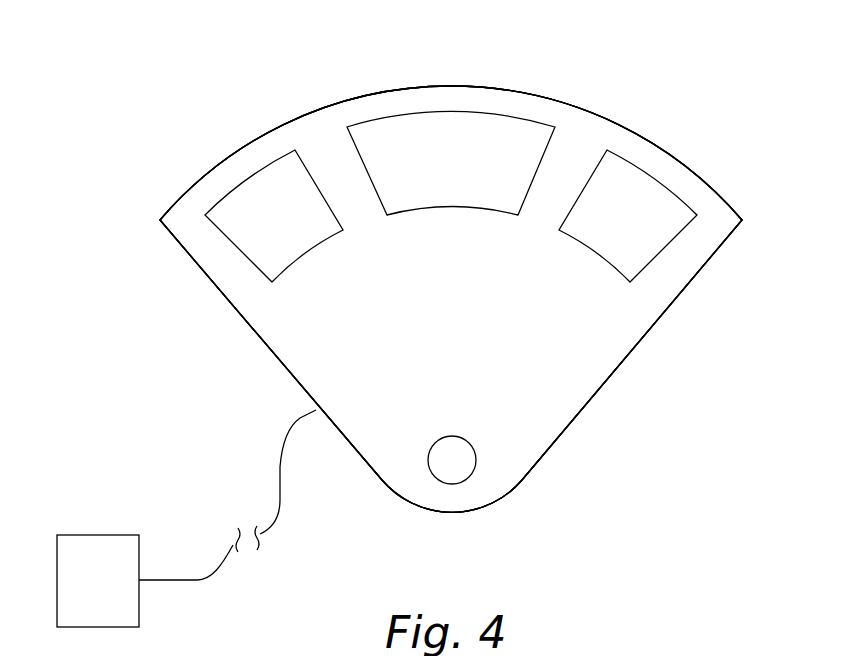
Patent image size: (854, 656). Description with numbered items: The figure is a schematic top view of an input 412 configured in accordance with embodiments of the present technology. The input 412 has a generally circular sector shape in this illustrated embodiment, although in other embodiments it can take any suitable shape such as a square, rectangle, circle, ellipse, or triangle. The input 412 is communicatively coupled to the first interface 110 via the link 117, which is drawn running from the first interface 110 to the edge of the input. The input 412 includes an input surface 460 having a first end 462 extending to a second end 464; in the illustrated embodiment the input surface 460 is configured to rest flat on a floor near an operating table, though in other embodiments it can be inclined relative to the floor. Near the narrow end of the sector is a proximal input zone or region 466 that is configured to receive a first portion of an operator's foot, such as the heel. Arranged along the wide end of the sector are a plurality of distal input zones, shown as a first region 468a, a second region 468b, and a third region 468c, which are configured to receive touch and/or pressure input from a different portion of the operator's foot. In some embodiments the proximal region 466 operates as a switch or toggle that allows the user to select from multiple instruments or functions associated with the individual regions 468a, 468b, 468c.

The input 412 is at (86, 108).
The input surface 460 is at (265, 350).
The first end 462 is at (572, 506).
The second end 464 is at (744, 160).
The proximal input zone or region 466 is at (428, 462).
The first region 468a is at (230, 195).
The second region 468b is at (450, 110).
The third region 468c is at (662, 185).
The first interface 110 is at (95, 533).
The link 117 is at (198, 578).